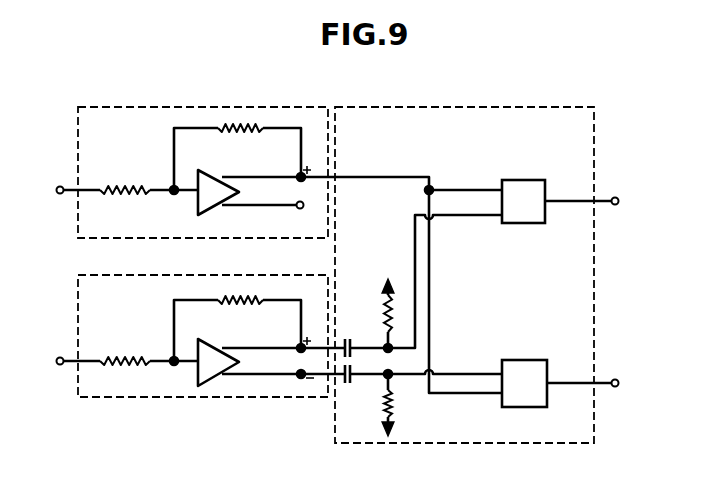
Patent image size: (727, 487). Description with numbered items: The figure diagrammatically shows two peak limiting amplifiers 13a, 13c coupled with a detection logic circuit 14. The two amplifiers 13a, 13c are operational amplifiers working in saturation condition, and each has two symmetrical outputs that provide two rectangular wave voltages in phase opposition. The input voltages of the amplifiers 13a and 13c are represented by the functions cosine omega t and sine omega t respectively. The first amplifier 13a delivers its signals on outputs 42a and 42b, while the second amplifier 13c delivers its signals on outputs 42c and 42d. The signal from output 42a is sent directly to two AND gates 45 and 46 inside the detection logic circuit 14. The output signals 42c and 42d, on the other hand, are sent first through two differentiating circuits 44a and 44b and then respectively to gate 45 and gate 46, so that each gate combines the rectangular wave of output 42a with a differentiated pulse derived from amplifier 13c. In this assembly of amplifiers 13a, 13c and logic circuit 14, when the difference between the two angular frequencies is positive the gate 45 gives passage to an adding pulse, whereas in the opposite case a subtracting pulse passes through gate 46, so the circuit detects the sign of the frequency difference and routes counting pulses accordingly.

The peak limiting amplifier 13a is at (243, 151).
The peak limiting amplifier 13c is at (213, 396).
The detection logic circuit 14 is at (485, 254).
The output of amplifier 13a 42a is at (298, 175).
The output of amplifier 13a 42b is at (284, 218).
The output of amplifier 13c 42c is at (297, 344).
The output of amplifier 13c 42d is at (295, 388).
The differentiating circuit 44a is at (375, 310).
The differentiating circuit 44b is at (416, 424).
The AND gate 45 is at (535, 188).
The AND gate 46 is at (538, 399).